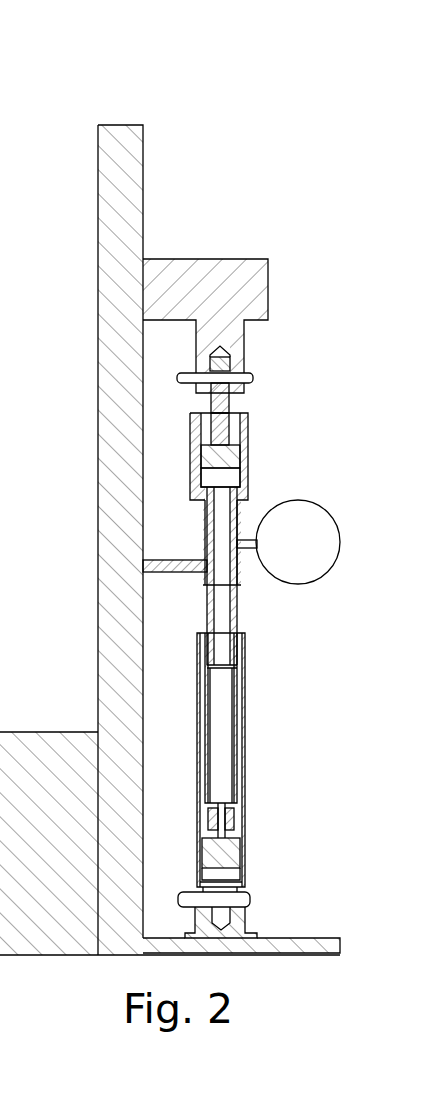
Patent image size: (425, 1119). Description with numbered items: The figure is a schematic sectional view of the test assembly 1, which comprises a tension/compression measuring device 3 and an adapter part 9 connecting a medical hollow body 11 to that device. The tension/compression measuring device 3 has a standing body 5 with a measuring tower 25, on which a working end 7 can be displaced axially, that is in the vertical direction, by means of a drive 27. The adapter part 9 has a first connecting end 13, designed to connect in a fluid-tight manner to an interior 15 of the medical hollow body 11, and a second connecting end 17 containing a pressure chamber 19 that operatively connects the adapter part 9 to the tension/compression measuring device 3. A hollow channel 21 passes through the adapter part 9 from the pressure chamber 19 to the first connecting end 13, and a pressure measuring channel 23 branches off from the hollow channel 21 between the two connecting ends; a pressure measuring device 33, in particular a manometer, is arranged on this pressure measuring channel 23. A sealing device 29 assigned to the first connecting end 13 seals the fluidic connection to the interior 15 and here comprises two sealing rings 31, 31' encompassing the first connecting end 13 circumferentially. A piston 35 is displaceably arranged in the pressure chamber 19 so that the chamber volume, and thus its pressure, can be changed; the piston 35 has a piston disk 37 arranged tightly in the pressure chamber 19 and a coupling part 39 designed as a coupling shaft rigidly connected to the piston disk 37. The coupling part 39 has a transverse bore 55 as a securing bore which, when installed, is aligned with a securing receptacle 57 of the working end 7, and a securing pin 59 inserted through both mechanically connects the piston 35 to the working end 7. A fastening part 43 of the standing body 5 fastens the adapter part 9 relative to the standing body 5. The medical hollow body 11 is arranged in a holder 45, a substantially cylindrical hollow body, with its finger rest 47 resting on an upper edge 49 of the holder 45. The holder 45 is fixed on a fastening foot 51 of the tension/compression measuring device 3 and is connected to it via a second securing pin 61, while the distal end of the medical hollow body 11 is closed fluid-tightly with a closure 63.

The test assembly 1 is at (187, 150).
The tension/compression measuring device 3 is at (55, 78).
The standing body 5 is at (90, 467).
The working end 7 is at (268, 327).
The adapter part 9 is at (350, 540).
The medical hollow body 11 is at (233, 753).
The first connecting end 13 is at (240, 645).
The interior 15 is at (220, 718).
The second connecting end 17 is at (272, 419).
The pressure chamber 19 is at (230, 473).
The hollow channel 21 is at (217, 608).
The pressure measuring channel 23 is at (240, 552).
The measuring tower 25 is at (110, 277).
The drive 27 is at (32, 732).
The sealing device 29 is at (248, 656).
The sealing ring 31 is at (266, 735).
The sealing ring 31' is at (115, 645).
The pressure measuring device 33 is at (334, 556).
The piston 35 is at (248, 402).
The piston disk 37 is at (232, 448).
The coupling part 39 is at (231, 402).
The fastening part 43 is at (175, 562).
The holder 45 is at (240, 790).
The finger rest 47 is at (241, 636).
The upper edge 49 is at (201, 636).
The fastening foot 51 is at (246, 925).
The transverse bore 55 is at (236, 352).
The securing receptacle 57 is at (232, 360).
The securing pin 59 is at (183, 373).
The second securing pin 61 is at (250, 900).
The closure 63 is at (230, 858).